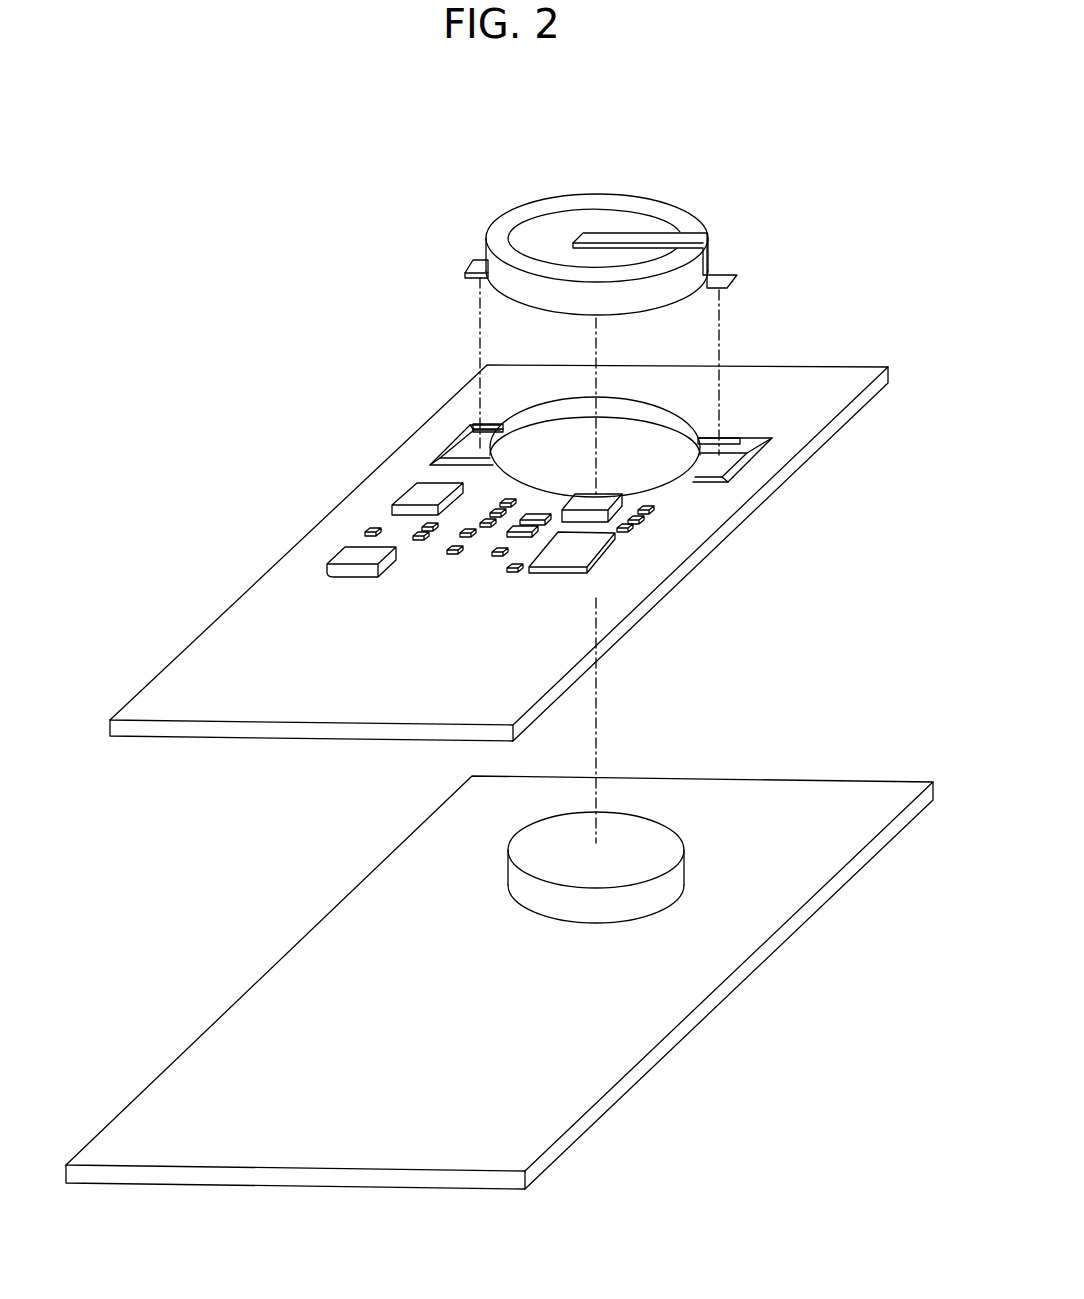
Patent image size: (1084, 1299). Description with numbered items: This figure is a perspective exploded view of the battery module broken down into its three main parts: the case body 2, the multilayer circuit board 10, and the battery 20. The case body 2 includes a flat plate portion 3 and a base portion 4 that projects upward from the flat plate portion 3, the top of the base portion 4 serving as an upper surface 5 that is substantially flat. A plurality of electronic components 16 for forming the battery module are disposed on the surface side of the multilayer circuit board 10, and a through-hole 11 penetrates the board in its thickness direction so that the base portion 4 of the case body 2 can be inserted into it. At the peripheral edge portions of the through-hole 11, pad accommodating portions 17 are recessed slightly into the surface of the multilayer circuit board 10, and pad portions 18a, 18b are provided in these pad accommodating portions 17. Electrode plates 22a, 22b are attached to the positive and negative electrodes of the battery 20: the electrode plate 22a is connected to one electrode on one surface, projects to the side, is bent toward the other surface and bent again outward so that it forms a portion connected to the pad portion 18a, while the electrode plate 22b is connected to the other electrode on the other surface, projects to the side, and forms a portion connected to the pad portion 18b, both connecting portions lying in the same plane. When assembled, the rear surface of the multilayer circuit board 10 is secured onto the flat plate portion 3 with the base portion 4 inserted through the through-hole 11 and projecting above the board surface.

The case body 2 is at (840, 798).
The flat plate portion 3 is at (762, 803).
The base portion 4 is at (655, 895).
The upper surface 5 is at (633, 843).
The multilayer circuit board 10 is at (826, 378).
The through-hole 11 is at (650, 488).
The electronic components 16 is at (457, 555).
The pad accommodating portions 17 is at (478, 425).
The pad portion 18a is at (760, 465).
The pad portion 18b is at (455, 448).
The battery 20 is at (543, 192).
The electrode plate 22a is at (613, 233).
The electrode plate 22b is at (478, 262).